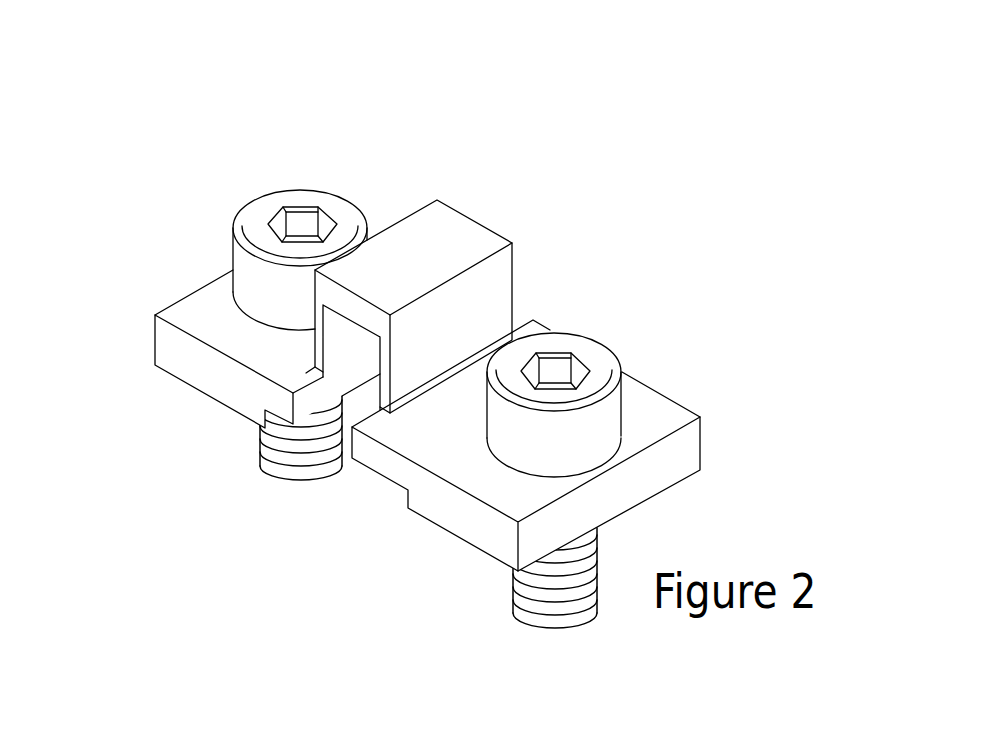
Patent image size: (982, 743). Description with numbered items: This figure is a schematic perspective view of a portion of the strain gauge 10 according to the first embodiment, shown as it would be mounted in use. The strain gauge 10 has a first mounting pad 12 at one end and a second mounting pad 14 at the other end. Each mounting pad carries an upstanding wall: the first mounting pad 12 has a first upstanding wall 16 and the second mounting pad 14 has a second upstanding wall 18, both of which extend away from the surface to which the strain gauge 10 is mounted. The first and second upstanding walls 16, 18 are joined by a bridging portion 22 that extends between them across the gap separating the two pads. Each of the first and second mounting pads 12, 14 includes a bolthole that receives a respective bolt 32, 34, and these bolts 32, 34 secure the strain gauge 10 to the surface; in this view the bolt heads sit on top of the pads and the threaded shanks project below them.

The strain gauge 10 is at (577, 203).
The first mounting pad 12 is at (193, 312).
The second mounting pad 14 is at (668, 422).
The first upstanding wall 16 is at (313, 323).
The second upstanding wall 18 is at (442, 340).
The bridging portion 22 is at (455, 240).
The bolt 32 is at (302, 200).
The bolt 34 is at (603, 360).